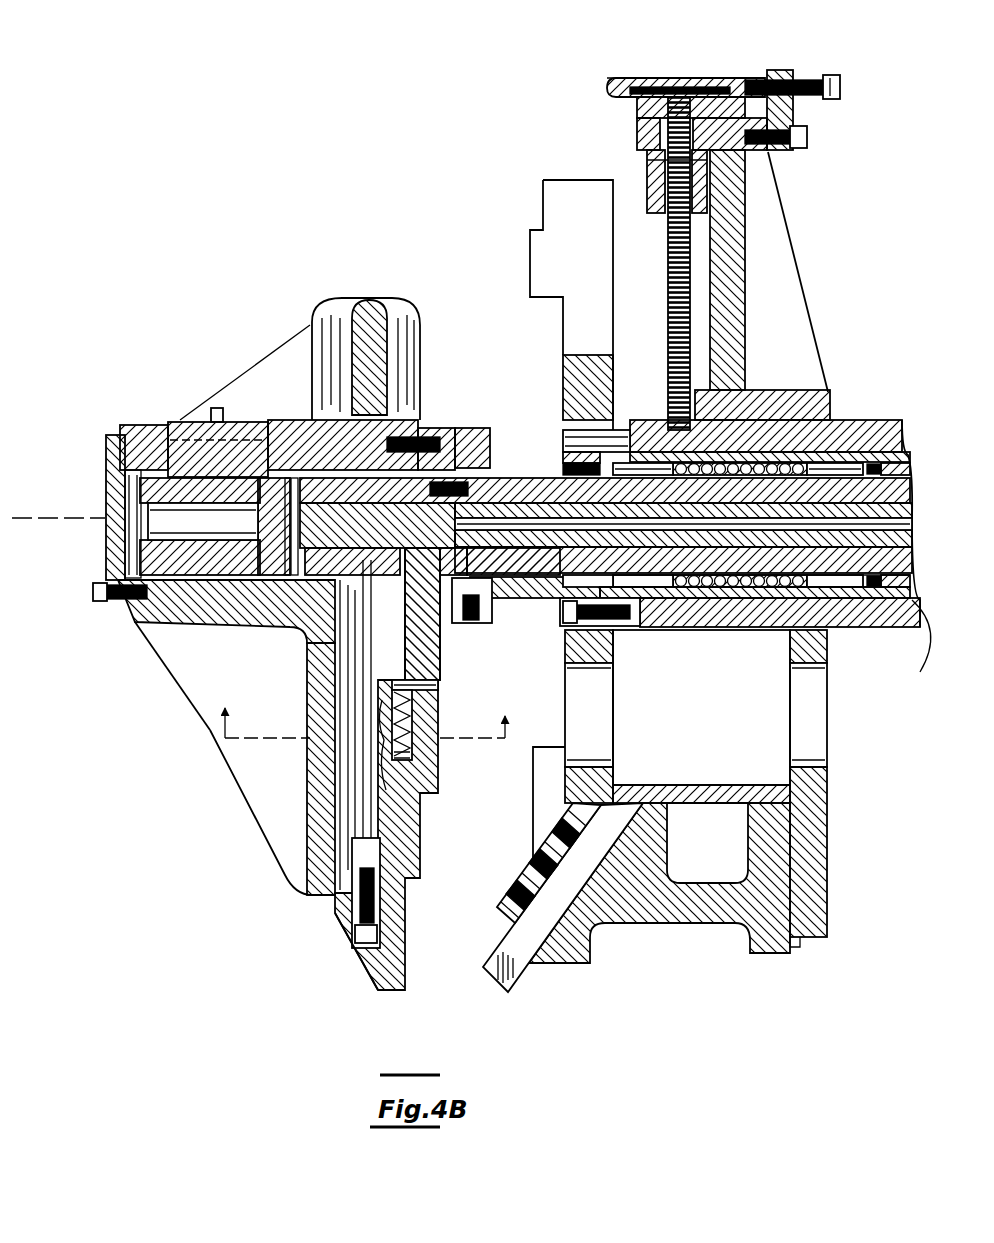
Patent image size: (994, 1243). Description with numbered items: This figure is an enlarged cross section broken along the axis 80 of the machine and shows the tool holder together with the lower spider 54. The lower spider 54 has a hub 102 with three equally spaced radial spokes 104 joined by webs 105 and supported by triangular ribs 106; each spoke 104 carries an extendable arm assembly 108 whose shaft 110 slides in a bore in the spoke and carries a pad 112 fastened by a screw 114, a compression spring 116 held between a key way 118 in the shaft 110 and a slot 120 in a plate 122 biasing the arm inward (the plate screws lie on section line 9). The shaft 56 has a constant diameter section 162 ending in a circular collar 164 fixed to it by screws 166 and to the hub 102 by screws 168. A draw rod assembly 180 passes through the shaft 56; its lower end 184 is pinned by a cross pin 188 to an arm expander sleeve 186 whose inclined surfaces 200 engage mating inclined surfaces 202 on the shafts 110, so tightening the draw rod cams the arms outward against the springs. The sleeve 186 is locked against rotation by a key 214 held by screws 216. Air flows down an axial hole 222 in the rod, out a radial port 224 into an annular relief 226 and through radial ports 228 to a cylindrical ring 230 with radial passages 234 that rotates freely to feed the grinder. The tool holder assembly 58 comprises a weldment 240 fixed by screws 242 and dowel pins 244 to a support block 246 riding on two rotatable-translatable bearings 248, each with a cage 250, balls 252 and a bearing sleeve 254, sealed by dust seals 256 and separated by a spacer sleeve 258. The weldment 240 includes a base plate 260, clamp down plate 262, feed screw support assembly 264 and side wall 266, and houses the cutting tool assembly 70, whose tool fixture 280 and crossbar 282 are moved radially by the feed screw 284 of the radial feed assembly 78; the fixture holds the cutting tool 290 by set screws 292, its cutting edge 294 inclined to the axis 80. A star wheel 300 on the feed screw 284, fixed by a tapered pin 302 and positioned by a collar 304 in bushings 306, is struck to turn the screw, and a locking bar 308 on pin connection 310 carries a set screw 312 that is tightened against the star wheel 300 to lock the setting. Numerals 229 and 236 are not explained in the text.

The section line 9- 9 is at (366, 708).
The lower spider 54 is at (257, 830).
The shaft 56 is at (884, 505).
The tool holder assembly 58 is at (700, 930).
The cutting tool assembly 70 is at (575, 948).
The radial feed assembly 78 is at (715, 76).
The axis of the machine 80 is at (48, 520).
The hub 102 is at (172, 612).
The spokes 104 is at (317, 680).
The webs 105 is at (366, 312).
The triangular ribs 106 is at (180, 687).
The extendable arm assembly 108 is at (412, 942).
The shaft 110 is at (393, 833).
The pad 112 is at (383, 987).
The screw 114 is at (357, 947).
The compression spring 116 is at (412, 712).
The key way 118 is at (410, 750).
The slot 120 is at (412, 685).
The plate 122 is at (425, 770).
The constant diameter section 162 is at (557, 478).
The circular collar 164 is at (438, 445).
The screws 166 is at (433, 502).
The screws 168 is at (440, 447).
The draw rod assembly 180 is at (897, 452).
The lower end of rod 184 is at (385, 715).
The arm expander sleeve 186 is at (132, 492).
The cross pin 188 is at (238, 522).
The inclined surfaces 200 is at (302, 622).
The inclined surfaces 202 is at (355, 735).
The key 214 is at (186, 425).
The screws 216 is at (212, 410).
The axial hole 222 is at (912, 522).
The radial port 224 is at (500, 583).
The annular relief 226 is at (558, 478).
The radial ports 228 is at (487, 607).
The sleeve 229 is at (605, 488).
The cylindrical ring 230 is at (470, 430).
The radial passages 234 is at (458, 622).
The wall 236 is at (433, 617).
The weldment 240 is at (822, 858).
The screws 242 is at (640, 622).
The dowel pins 244 is at (615, 440).
The support block 246 is at (877, 432).
The rotatable-translatable bearings 248 is at (832, 445).
The cage 250 is at (835, 600).
The balls 252 is at (738, 588).
The bearing sleeve 254 is at (768, 630).
The dust seals 256 is at (887, 600).
The spacer sleeve 258 is at (912, 649).
The base plate 260 is at (822, 802).
The clamp down plate 262 is at (600, 713).
The feed screw support assembly 264 is at (763, 190).
The side wall 266 is at (733, 727).
The tool fixture 280 is at (630, 928).
The crossbar 282 is at (657, 205).
The feed screw 284 is at (665, 258).
The cutting tool 290 is at (517, 975).
The set screws 292 is at (520, 898).
The cutting edge 294 is at (493, 980).
The star wheel 300 is at (612, 88).
The tapered pin 302 is at (678, 87).
The collar 304 is at (645, 165).
The bushings 306 is at (722, 100).
The locking bar 308 is at (795, 113).
The pin connection 310 is at (808, 142).
The set screw 312 is at (832, 76).